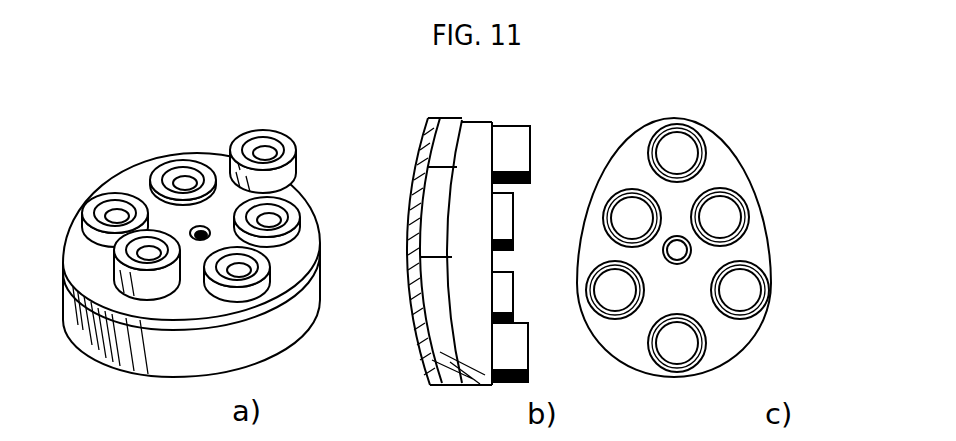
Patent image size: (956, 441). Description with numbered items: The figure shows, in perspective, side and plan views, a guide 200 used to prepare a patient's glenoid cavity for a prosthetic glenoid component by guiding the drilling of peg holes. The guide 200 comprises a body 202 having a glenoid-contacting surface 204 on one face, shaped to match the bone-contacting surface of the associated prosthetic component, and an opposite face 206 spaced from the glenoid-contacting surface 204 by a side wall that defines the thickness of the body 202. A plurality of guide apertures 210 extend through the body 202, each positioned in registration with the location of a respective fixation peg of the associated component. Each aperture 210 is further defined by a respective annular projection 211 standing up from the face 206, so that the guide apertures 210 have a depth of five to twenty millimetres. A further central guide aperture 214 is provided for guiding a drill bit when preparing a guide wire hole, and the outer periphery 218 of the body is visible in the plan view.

The guide 200 is at (160, 129).
The body 202 is at (467, 183).
The glenoid-contacting surface 204 is at (414, 167).
The opposite face 206 is at (223, 193).
The guide apertures 210 is at (173, 183).
The annular projection 211 is at (133, 297).
The central guide aperture 214 is at (206, 236).
The egg-shaped outer edge 218 is at (750, 185).